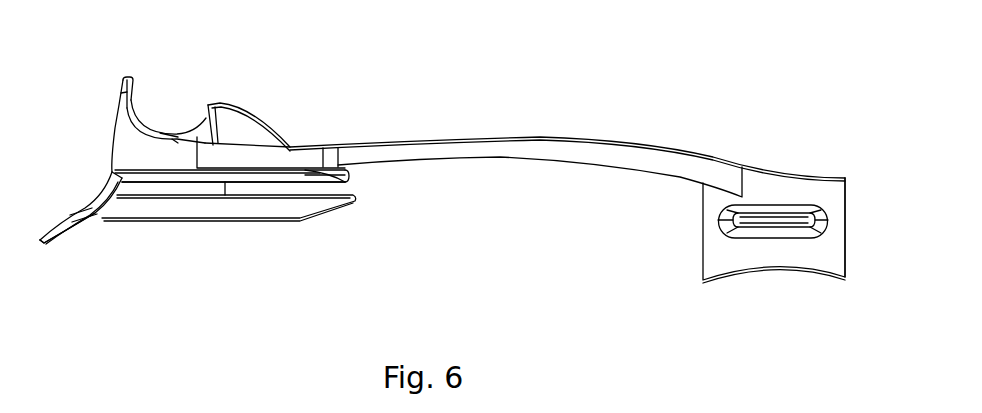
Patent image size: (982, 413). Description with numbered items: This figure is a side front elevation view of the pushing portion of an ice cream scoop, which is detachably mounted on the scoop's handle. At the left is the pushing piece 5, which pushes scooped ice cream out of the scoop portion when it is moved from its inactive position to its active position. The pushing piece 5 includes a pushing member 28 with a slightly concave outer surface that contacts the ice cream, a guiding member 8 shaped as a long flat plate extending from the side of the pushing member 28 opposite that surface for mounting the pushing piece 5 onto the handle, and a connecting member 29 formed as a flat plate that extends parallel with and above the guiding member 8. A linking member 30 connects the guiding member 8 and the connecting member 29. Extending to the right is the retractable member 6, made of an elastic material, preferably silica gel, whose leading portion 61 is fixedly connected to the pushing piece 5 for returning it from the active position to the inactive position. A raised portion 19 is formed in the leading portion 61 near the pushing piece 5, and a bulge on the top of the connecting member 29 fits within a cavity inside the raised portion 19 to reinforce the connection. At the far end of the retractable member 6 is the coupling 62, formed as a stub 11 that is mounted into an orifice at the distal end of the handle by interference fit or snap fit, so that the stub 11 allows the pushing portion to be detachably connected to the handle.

The pushing member 28 is at (107, 175).
The connecting member 29 is at (163, 160).
The leading portion 61 is at (205, 162).
The raised portion 19 is at (220, 112).
The retractable member 6 is at (567, 143).
The coupling 62 is at (845, 207).
The stub 11 is at (788, 255).
The pushing piece 5 is at (135, 208).
The linking member 30 is at (177, 183).
The guiding member 8 is at (268, 207).